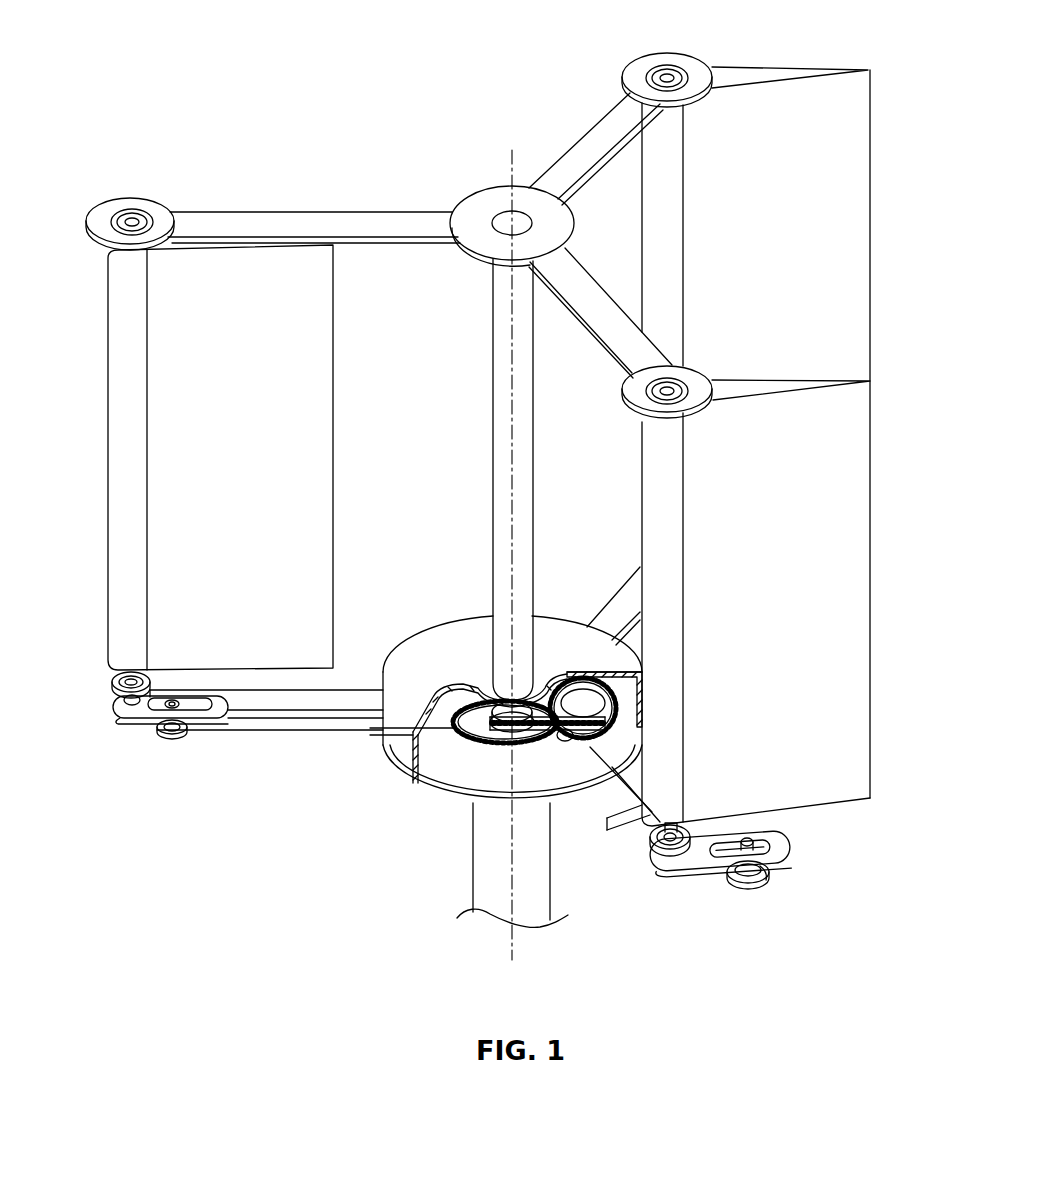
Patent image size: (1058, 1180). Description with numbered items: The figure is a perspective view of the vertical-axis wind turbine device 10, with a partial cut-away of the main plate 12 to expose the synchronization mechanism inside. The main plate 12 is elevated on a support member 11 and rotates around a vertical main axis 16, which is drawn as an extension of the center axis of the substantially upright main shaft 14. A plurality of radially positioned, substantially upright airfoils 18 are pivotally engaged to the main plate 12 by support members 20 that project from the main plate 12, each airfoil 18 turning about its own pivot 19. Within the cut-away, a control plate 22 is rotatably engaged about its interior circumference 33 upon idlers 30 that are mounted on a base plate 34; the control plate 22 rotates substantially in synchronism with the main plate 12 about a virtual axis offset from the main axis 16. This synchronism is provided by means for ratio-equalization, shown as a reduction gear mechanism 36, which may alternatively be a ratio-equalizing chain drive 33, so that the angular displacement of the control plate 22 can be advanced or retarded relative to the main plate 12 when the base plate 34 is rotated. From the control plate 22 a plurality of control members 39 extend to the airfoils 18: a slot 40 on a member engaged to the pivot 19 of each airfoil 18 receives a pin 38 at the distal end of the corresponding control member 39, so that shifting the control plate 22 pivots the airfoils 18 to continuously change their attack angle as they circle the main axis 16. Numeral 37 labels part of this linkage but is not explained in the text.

The device 10 is at (277, 190).
The support member 11 is at (545, 882).
The main plate 12 is at (428, 630).
The main shaft 14 is at (495, 415).
The main axis 16 is at (497, 189).
The airfoil 18 is at (790, 69).
The pivot 19 is at (138, 213).
The support member 20 is at (322, 212).
The control plate 22 is at (455, 760).
The idler 30 is at (550, 762).
The ratio-equalizing chain drive 33 is at (560, 690).
The base plate 34 is at (430, 787).
The reduction gear mechanism 36 is at (478, 768).
The link 37 is at (125, 712).
The pin 38 is at (180, 730).
The control member 39 is at (312, 720).
The slot 40 is at (200, 705).